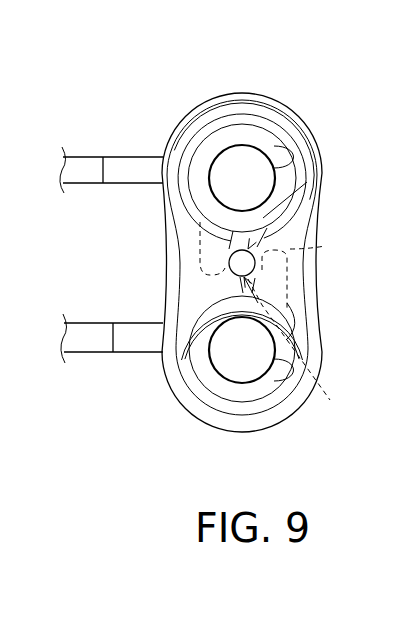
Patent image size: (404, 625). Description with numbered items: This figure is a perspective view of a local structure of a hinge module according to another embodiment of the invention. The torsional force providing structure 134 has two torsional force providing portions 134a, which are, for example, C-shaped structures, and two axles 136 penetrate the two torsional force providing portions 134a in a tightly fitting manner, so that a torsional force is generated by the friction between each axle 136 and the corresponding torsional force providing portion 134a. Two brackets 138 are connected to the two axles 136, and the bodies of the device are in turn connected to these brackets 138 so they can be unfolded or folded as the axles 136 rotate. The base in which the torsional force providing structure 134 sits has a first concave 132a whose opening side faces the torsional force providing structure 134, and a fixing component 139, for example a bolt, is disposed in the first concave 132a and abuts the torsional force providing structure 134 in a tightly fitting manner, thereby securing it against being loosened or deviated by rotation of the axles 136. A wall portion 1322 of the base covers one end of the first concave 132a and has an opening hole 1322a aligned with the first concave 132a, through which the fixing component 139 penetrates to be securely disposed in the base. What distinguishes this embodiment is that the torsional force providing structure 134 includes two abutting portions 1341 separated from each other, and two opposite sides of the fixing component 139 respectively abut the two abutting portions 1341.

The first concave 132a is at (304, 372).
The torsional force providing structure 134 is at (291, 243).
The torsional force providing portion 134a is at (262, 140).
The axle 136 is at (230, 160).
The bracket 138 is at (123, 163).
The fixing component 139 is at (243, 262).
The wall portion 1322 is at (295, 292).
The opening hole 1322a is at (248, 249).
The abutting portion 1341 is at (210, 258).